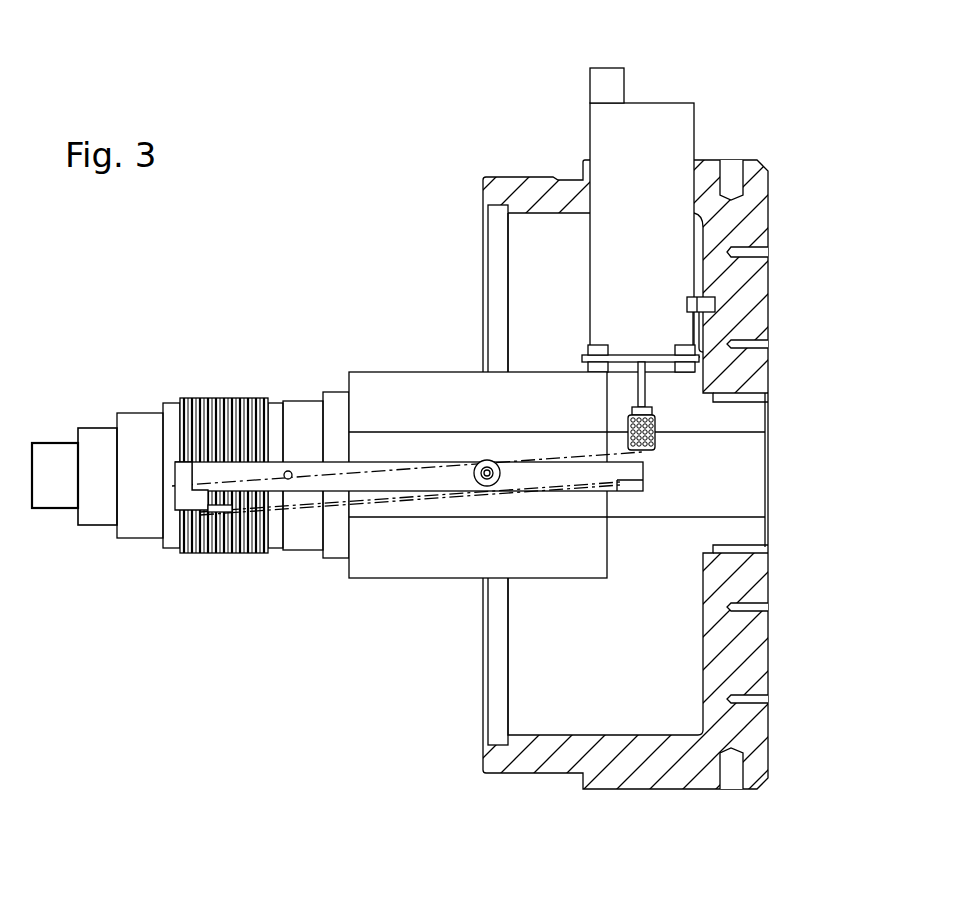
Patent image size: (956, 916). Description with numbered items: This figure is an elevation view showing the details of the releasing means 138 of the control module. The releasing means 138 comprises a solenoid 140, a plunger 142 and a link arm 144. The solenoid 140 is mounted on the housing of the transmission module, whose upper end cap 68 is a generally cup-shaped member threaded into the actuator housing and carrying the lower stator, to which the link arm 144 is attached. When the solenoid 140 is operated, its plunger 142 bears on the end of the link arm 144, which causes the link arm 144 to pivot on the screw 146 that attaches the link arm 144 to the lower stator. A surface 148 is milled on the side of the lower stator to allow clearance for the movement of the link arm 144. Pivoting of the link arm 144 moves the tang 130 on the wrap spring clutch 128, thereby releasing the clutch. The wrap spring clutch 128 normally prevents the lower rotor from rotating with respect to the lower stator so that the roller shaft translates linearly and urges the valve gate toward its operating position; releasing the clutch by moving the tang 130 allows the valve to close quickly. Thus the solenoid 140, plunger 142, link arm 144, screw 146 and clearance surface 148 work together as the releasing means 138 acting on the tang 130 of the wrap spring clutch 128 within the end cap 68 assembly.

The upper end cap 68 is at (642, 790).
The wrap spring clutch 128 is at (222, 398).
The tang 130 is at (187, 488).
The releasing means 138 is at (385, 573).
The solenoid 140 is at (643, 103).
The plunger 142 is at (657, 448).
The link arm 144 is at (295, 458).
The screw 146 is at (487, 460).
The surface 148 is at (748, 500).